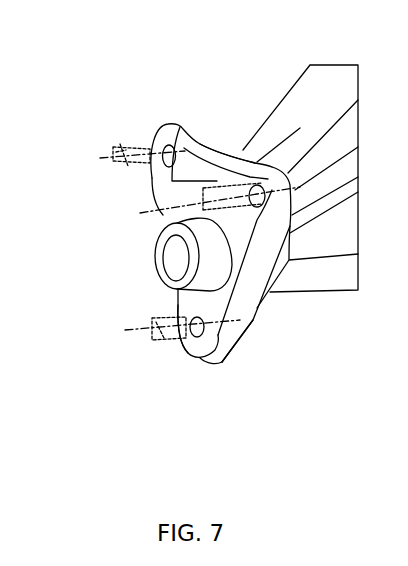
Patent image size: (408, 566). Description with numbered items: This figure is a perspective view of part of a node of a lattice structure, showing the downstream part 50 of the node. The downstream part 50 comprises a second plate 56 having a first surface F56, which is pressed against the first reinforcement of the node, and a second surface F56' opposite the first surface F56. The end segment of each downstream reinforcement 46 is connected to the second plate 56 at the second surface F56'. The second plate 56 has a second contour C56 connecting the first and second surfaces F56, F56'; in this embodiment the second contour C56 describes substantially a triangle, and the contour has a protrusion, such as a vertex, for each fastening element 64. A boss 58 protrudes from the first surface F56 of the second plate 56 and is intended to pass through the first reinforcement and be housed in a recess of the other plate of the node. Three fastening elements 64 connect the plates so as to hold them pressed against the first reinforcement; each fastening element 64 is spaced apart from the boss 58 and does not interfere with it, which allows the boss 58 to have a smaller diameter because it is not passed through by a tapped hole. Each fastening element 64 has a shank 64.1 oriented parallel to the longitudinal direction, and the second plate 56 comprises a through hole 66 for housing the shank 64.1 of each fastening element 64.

The downstream part 50 is at (259, 112).
The downstream reinforcement 46 is at (340, 134).
The second plate 56 is at (194, 134).
The second contour C56 is at (212, 144).
The first surface F56 is at (129, 323).
The second surface F56' is at (291, 341).
The boss 58 is at (172, 257).
The through hole 66 is at (176, 145).
The fastening element 64 is at (96, 158).
The shank 64.1 is at (128, 146).